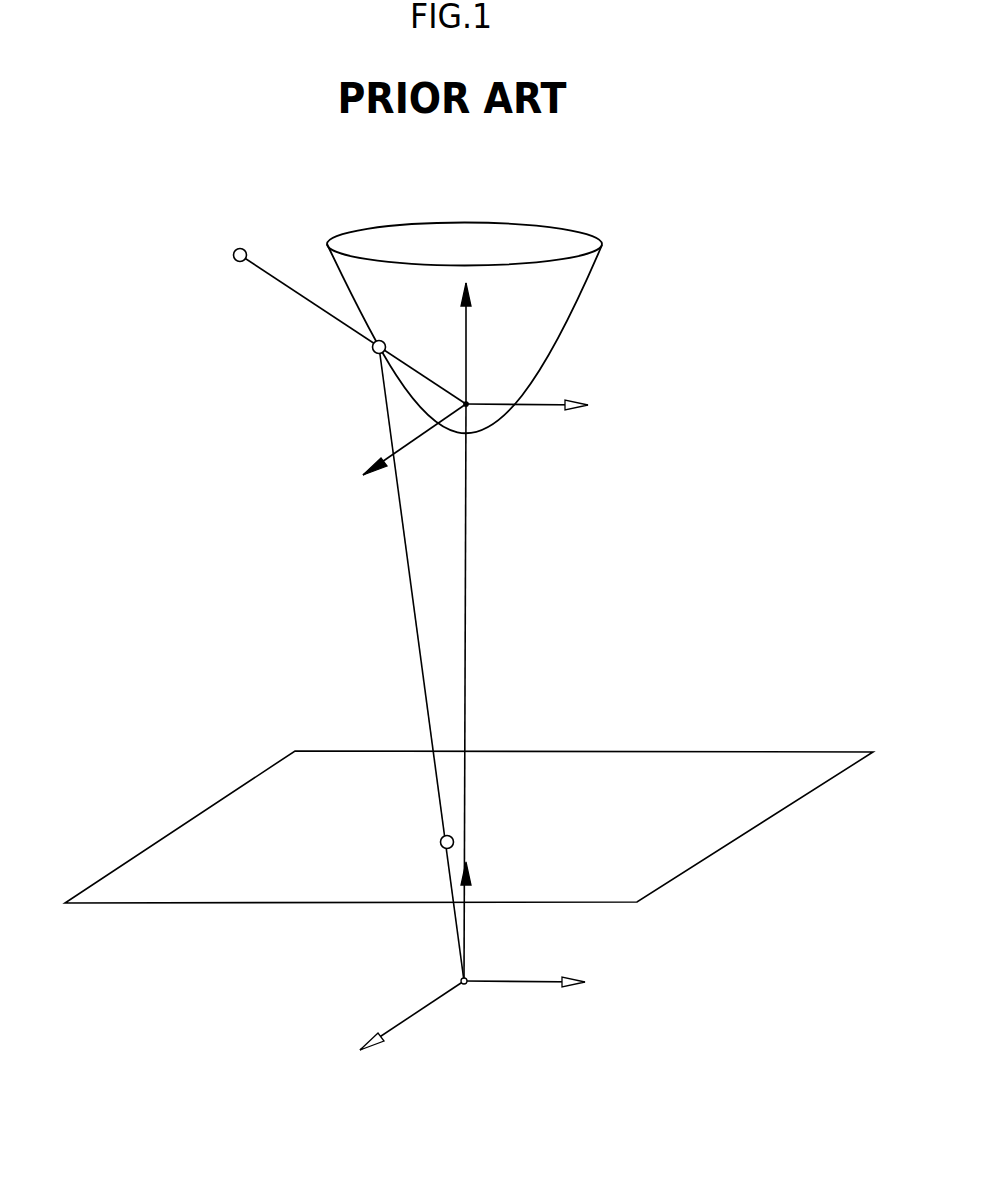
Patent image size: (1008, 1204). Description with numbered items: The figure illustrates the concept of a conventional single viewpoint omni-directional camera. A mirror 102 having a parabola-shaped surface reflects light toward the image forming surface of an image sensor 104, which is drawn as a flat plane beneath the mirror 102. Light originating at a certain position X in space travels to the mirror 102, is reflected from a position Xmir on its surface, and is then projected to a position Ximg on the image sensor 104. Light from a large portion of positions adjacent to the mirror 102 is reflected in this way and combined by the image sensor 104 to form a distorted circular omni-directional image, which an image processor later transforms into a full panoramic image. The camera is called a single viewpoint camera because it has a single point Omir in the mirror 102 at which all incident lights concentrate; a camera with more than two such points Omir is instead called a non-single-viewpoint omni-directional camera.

The mirror 102 is at (555, 317).
The image sensor 104 is at (743, 825).
The position in space X is at (239, 240).
The position on the mirror Xmir is at (349, 356).
The single point of the mirror Omir is at (475, 379).
The position on the image sensor Ximg is at (414, 833).